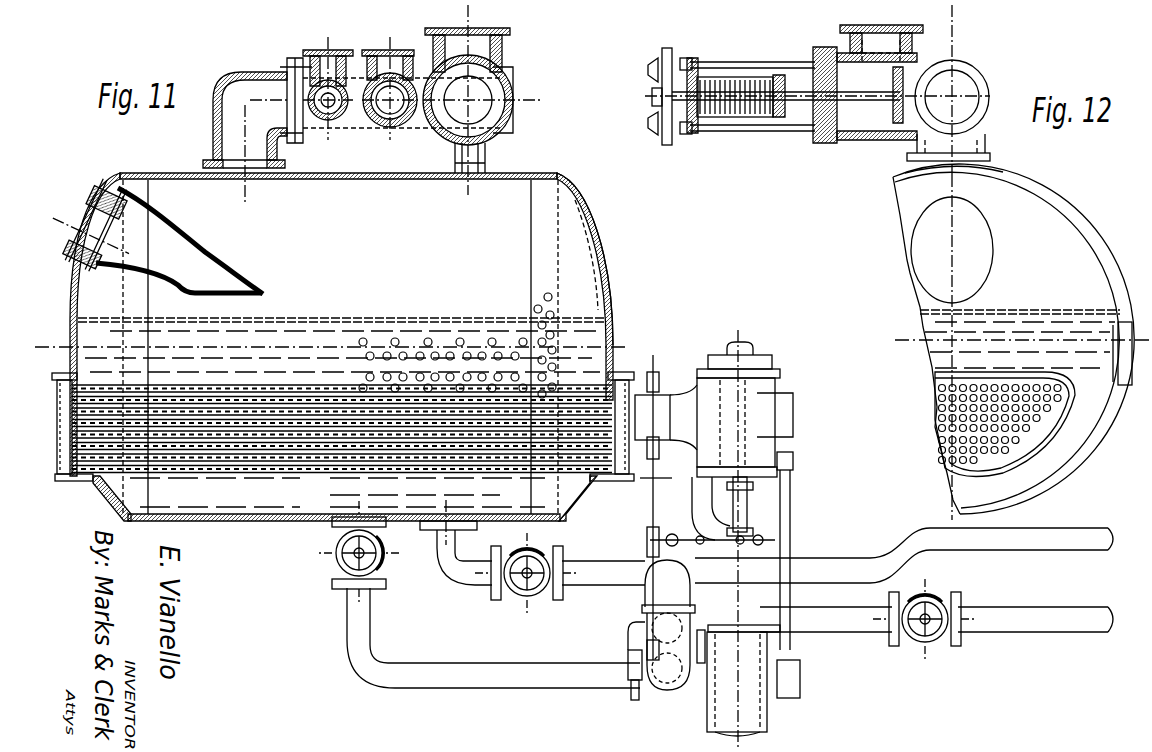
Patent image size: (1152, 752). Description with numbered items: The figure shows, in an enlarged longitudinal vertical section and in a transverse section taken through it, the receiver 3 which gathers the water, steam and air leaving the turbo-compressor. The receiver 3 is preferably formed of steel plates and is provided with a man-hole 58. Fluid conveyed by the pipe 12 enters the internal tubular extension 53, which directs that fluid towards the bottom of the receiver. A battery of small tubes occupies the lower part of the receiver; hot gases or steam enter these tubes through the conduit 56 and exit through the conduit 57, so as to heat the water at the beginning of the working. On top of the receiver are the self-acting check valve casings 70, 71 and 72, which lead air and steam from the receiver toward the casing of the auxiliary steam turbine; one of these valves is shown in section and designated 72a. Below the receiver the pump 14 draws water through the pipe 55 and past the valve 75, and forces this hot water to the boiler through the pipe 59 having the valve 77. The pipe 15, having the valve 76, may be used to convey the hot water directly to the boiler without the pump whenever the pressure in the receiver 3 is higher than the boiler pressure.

In FIG. 11, the receiver 3 is at (256, 518).
In FIG. 11, the pipe 12 is at (477, 190).
In FIG. 11, the pump 14 is at (766, 720).
In FIG. 11, the pipe 15 is at (602, 580).
In FIG. 11, the internal tubular extension 53 is at (210, 268).
In FIG. 11, the pipe 55 is at (361, 668).
In FIG. 11, the conduit 56 is at (628, 482).
In FIG. 11, the conduit 57 is at (78, 481).
In FIG. 11, the man-hole 58 is at (592, 249).
In FIG. 11, the pipe 59 is at (850, 628).
In FIG. 11, the self-acting check valve casing 70 is at (321, 54).
In FIG. 11, the self-acting check valve casing 71 is at (384, 54).
In FIG. 11, the self-acting check valve casing 72 is at (503, 57).
In FIG. 12, the check valve 72a is at (900, 130).
In FIG. 11, the valve 75 is at (337, 568).
In FIG. 11, the valve 76 is at (516, 601).
In FIG. 11, the valve 77 is at (931, 648).